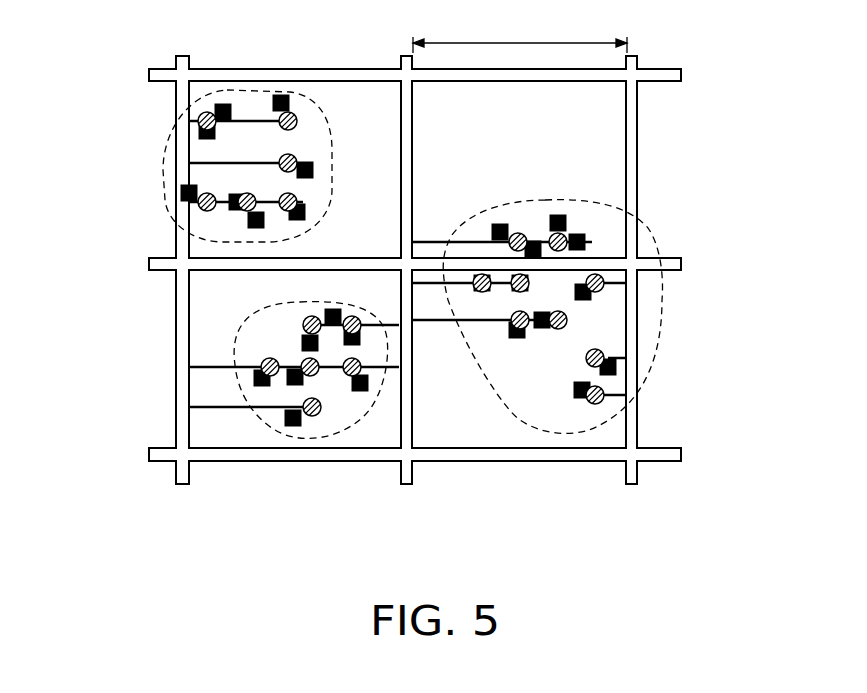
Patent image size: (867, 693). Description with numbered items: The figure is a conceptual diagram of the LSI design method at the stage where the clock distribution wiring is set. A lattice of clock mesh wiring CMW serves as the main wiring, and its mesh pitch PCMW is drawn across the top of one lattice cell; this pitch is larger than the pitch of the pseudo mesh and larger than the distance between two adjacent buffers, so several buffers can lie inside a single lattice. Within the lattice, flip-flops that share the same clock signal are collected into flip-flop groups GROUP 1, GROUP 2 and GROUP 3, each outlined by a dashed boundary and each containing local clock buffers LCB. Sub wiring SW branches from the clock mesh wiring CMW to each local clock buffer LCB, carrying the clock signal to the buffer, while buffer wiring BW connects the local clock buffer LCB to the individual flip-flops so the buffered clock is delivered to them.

The clock mesh wiring CMW is at (180, 485).
The mesh pitch PCMW is at (520, 33).
The sub wiring SW is at (250, 121).
The buffer wiring BW is at (512, 233).
The local clock buffer LCB is at (296, 161).
The flip-flop group GROUP 1 is at (163, 180).
The flip-flop group GROUP 2 is at (235, 340).
The flip-flop group GROUP 3 is at (656, 242).